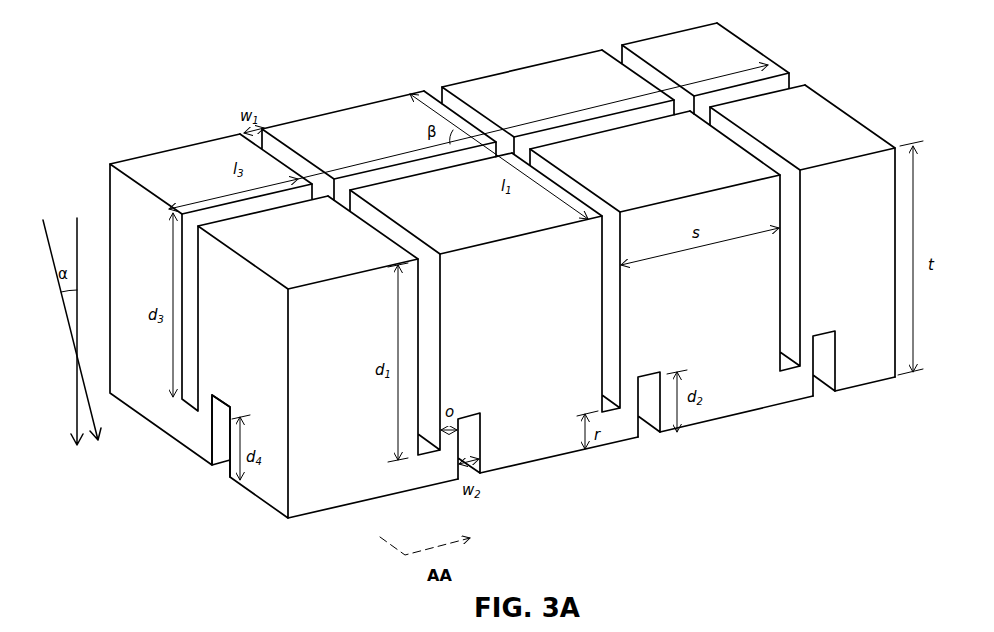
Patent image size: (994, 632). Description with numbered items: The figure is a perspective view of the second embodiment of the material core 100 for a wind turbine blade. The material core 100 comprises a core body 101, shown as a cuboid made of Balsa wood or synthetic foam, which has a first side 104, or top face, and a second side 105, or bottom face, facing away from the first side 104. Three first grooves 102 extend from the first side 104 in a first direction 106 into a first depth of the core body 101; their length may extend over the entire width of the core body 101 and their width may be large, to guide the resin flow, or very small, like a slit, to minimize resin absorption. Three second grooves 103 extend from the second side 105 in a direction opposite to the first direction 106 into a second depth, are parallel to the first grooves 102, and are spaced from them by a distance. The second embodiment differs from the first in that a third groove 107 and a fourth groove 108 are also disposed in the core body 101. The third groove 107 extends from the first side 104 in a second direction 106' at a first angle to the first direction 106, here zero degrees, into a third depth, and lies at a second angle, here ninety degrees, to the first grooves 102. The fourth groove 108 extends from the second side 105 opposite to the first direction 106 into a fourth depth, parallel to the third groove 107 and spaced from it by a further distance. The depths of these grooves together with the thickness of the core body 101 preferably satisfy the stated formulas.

The material core 100 is at (168, 43).
The core body 101 is at (846, 106).
The first grooves 102 is at (444, 340).
The second grooves 103 is at (485, 444).
The first side 104 is at (360, 121).
The second side 105 is at (538, 464).
The first direction 106 is at (57, 318).
The second direction 106' is at (84, 320).
The third groove 107 is at (205, 330).
The fourth groove 108 is at (215, 431).